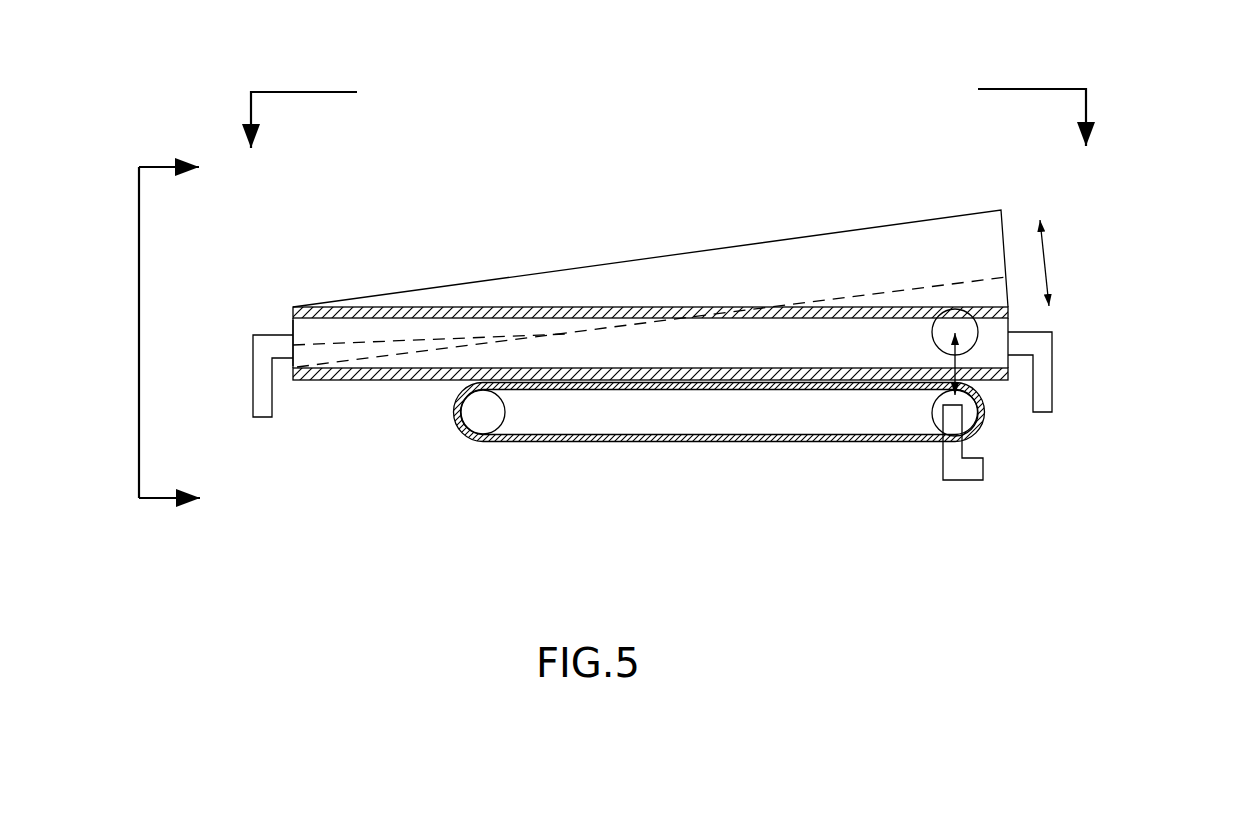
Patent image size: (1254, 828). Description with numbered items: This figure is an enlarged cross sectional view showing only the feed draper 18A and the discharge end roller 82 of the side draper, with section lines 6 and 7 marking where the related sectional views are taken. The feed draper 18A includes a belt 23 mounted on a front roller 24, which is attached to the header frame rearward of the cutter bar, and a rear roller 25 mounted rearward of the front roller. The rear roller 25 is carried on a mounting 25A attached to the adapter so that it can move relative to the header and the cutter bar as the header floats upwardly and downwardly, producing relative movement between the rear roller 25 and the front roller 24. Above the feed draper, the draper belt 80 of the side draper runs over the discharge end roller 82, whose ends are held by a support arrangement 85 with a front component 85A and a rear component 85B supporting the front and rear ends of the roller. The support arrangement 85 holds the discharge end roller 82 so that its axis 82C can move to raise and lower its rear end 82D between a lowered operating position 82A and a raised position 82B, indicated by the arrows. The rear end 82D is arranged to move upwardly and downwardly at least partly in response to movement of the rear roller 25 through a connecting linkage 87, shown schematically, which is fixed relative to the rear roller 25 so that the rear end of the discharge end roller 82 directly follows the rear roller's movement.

The section line 6- 6 is at (667, 117).
The section line 7- 7 is at (155, 335).
The feed draper 18A is at (728, 442).
The belt 23 is at (642, 442).
The front roller 24 is at (480, 412).
The rear roller 25 is at (938, 440).
The mounting 25A is at (973, 473).
The draper belt 80 is at (548, 307).
The discharge end roller 82 is at (403, 320).
The operating position 82A is at (703, 340).
The raised position 82B is at (824, 222).
The axis 82C is at (332, 345).
The rear end 82D is at (987, 352).
The support arrangement 85 is at (690, 314).
The front support component 85A is at (262, 370).
The rear support component 85B is at (1043, 362).
The connecting linkage 87 is at (1015, 460).